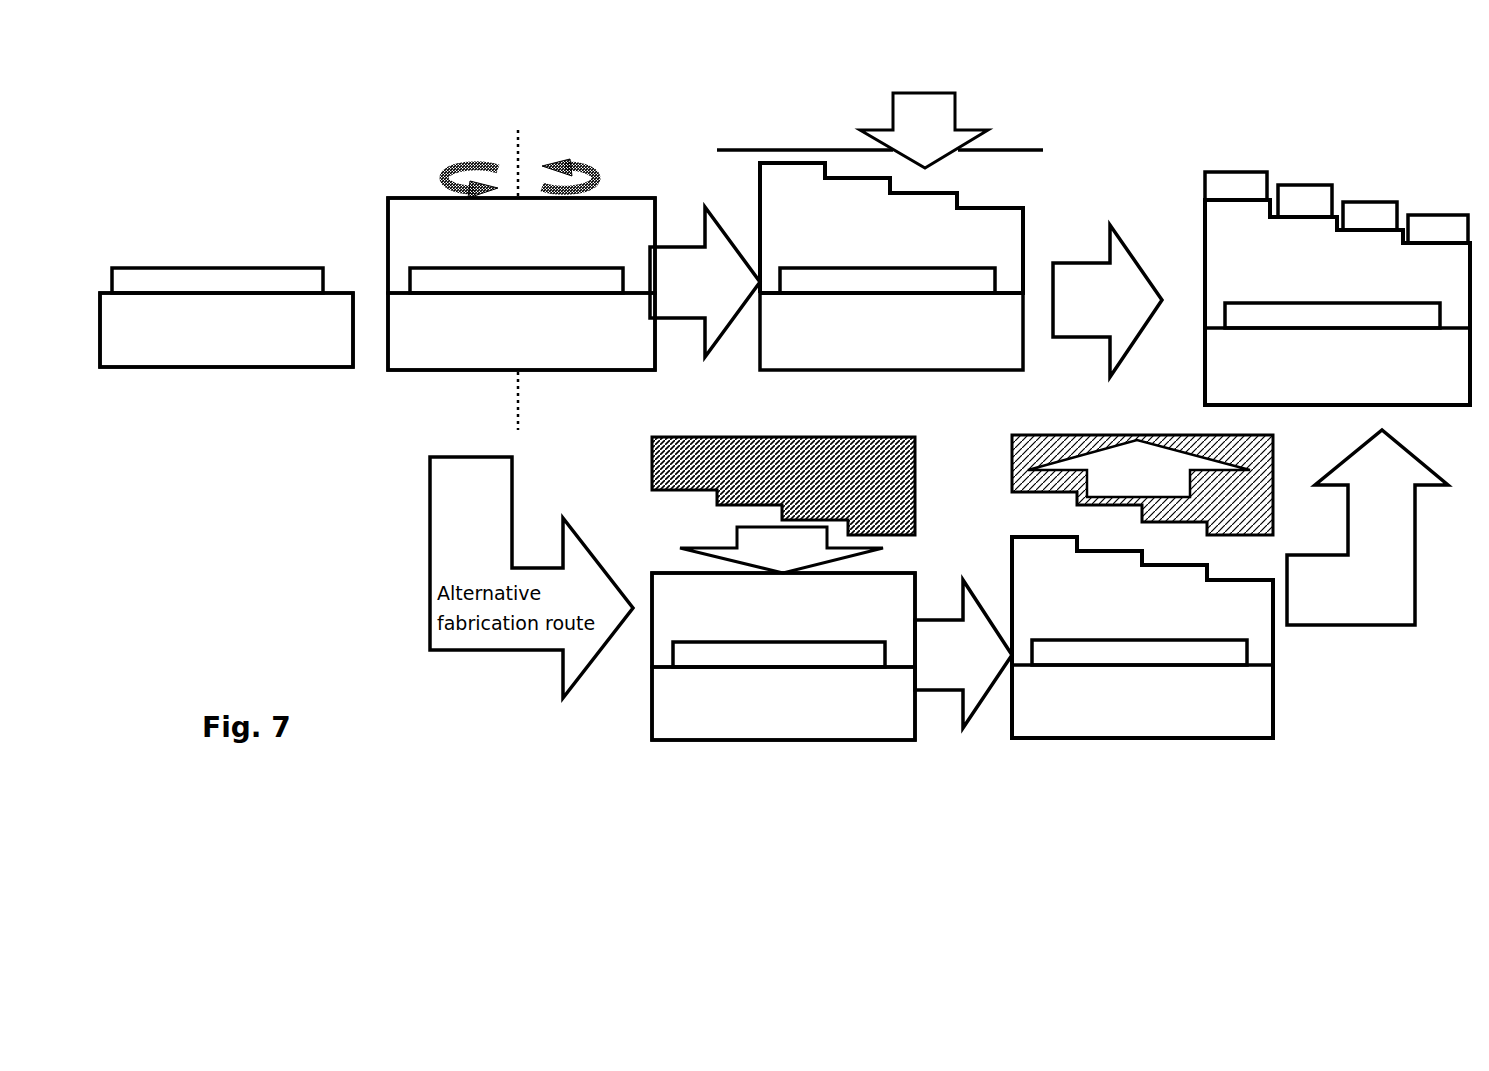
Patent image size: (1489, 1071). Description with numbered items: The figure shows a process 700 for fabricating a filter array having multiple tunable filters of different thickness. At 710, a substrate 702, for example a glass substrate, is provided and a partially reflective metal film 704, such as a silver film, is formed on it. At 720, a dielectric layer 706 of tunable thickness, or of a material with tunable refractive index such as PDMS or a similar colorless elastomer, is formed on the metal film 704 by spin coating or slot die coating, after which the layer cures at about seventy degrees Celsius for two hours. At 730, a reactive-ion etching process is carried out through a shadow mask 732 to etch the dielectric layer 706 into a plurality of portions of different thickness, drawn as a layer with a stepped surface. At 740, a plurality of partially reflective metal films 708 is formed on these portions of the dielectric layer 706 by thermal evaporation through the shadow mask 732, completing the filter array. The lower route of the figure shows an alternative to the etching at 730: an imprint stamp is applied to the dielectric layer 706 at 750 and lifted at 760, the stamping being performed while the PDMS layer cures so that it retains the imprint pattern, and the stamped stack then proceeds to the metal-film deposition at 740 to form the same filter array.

The process 700 is at (231, 62).
The substrate 702 is at (307, 362).
The partially reflective metal film 704 is at (292, 272).
The dielectric layer 706 is at (929, 415).
The metal films 708 is at (1229, 172).
The substrate providing step 710 is at (240, 193).
The dielectric layer forming step 720 is at (540, 94).
The RIE etching step 730 is at (882, 166).
The shadow mask 732 is at (826, 143).
The metal film forming step 740 is at (1363, 102).
The imprint stamping step 750 is at (782, 745).
The stamp lifting step 760 is at (1107, 748).